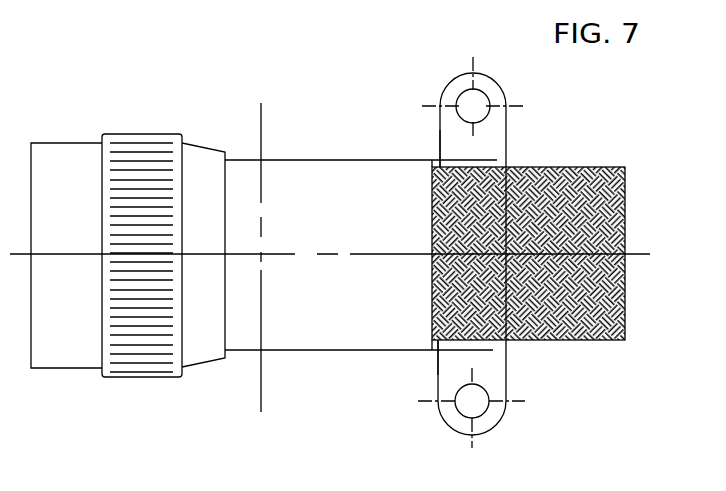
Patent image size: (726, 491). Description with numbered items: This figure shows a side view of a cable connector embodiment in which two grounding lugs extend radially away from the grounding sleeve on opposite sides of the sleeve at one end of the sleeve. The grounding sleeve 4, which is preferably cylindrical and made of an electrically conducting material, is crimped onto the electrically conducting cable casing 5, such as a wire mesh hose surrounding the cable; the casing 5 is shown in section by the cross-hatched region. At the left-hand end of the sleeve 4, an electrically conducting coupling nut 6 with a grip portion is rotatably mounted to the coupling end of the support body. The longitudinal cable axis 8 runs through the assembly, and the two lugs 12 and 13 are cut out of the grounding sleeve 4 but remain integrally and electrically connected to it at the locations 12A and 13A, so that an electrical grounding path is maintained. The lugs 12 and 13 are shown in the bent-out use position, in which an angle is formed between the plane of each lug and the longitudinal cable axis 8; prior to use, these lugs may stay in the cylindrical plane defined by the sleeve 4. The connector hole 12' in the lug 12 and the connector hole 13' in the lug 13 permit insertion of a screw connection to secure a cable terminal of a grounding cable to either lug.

The grounding sleeve 4 is at (311, 160).
The cable casing 5 is at (600, 166).
The coupling nut 6 is at (205, 363).
The longitudinal cable axis 8 is at (640, 254).
The lug 12 is at (506, 229).
The connector hole 12' is at (451, 77).
The connection of lug 12A is at (440, 160).
The lug 13 is at (495, 394).
The connector hole 13' is at (501, 425).
The connection of lug 13A is at (468, 343).